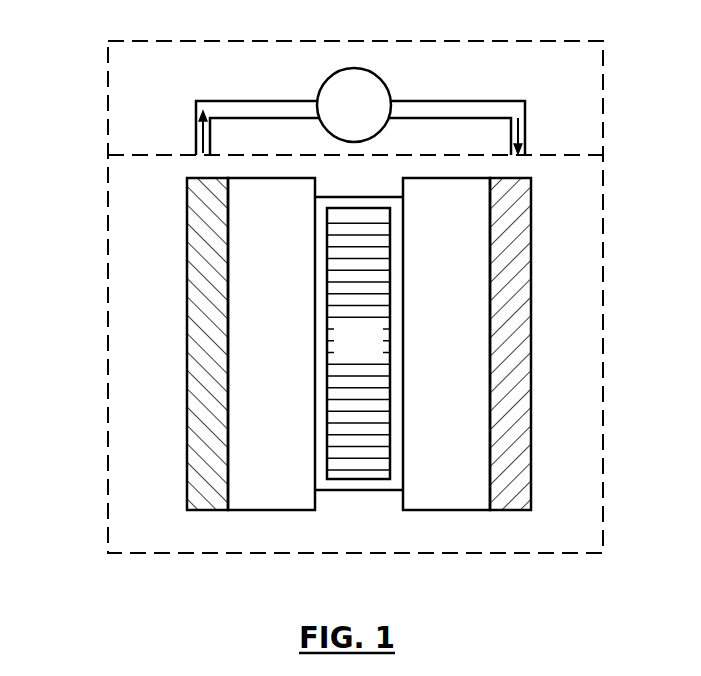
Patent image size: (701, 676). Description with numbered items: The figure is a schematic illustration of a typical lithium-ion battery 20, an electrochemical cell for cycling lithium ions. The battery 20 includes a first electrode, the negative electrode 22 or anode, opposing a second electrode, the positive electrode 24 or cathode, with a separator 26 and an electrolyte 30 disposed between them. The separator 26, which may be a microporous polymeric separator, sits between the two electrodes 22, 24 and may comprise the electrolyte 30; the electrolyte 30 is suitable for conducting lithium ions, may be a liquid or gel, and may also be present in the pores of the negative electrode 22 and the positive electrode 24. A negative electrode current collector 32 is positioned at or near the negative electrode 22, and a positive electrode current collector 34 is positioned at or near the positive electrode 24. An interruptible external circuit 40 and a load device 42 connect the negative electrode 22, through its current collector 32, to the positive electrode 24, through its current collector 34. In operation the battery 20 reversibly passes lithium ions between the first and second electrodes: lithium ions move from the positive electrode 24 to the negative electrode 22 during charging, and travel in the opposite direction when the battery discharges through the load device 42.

The lithium-ion battery 20 is at (89, 249).
The negative electrode 22 is at (446, 344).
The positive electrode 24 is at (271, 344).
The separator 26 is at (358, 343).
The electrolyte 30 is at (391, 483).
The negative electrode current collector 32 is at (531, 230).
The positive electrode current collector 34 is at (187, 238).
The interruptible external circuit 40 is at (160, 41).
The load device 42 is at (360, 111).